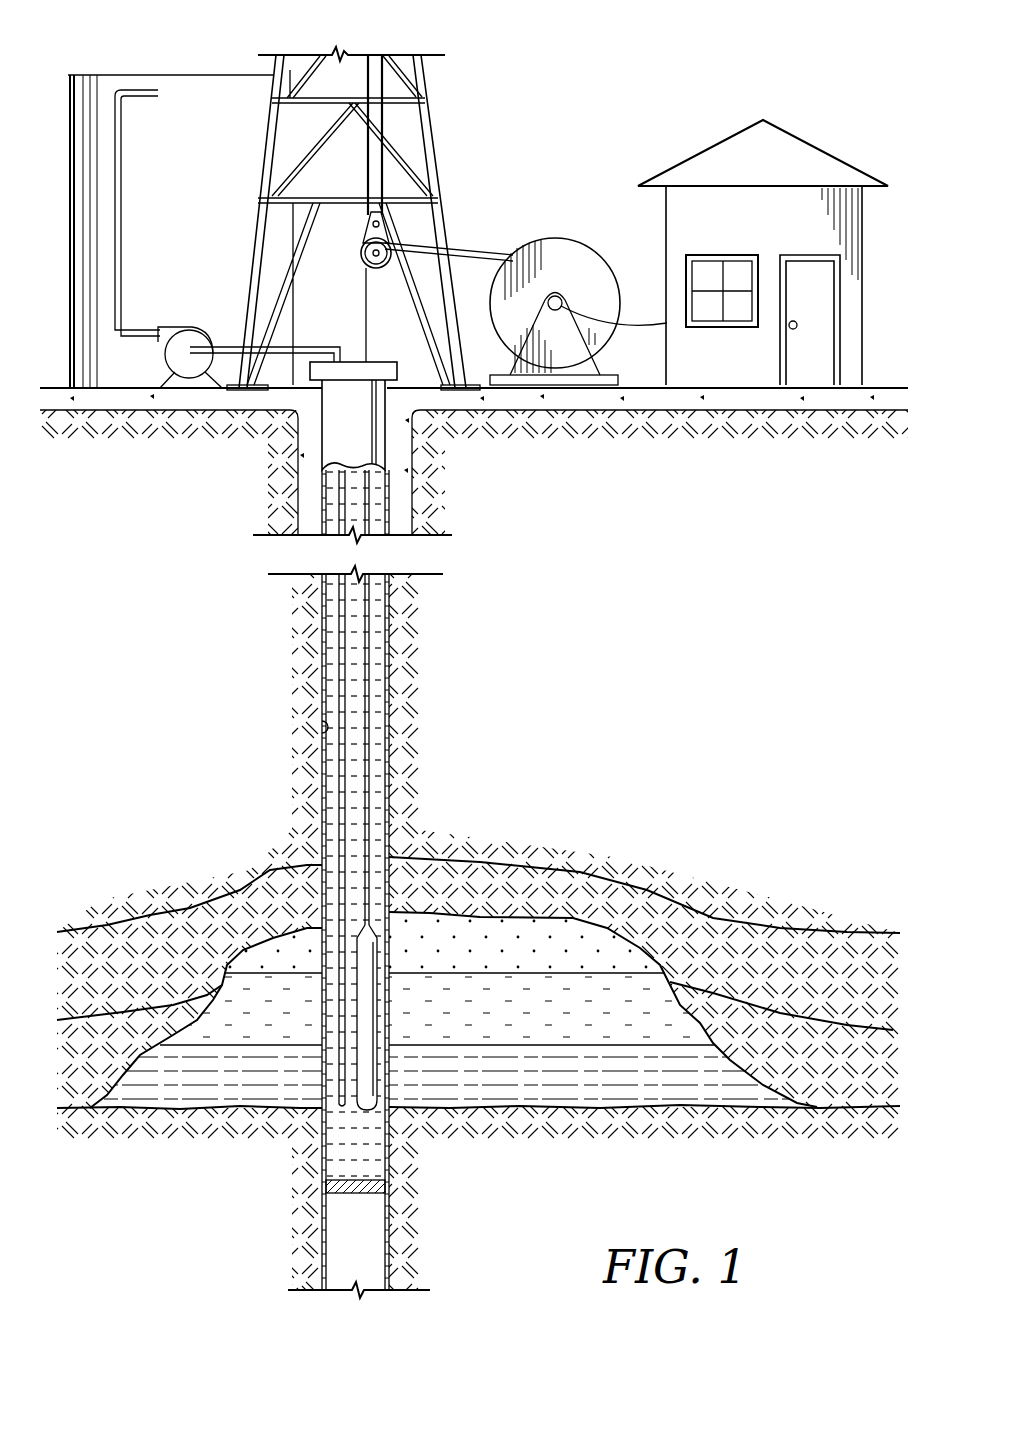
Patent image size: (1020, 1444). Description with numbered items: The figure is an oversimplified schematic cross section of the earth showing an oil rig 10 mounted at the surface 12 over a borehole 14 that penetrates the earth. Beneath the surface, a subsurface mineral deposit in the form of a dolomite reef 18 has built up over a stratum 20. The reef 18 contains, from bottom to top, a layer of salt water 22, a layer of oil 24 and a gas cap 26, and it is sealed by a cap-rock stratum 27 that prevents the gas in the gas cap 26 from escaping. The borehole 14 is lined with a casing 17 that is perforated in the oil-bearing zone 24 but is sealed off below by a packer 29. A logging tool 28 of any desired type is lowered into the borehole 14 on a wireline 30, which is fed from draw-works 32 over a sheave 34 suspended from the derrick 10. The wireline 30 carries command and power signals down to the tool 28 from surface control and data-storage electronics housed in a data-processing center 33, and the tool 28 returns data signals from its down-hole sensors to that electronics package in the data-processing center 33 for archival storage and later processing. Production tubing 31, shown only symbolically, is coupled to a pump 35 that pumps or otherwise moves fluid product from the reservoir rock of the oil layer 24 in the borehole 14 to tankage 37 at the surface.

The oil rig 10 is at (436, 121).
The surface 12 is at (882, 386).
The borehole 14 is at (322, 776).
The casing 17 is at (322, 722).
The dolomite reef 18 is at (672, 956).
The stratum 20 is at (491, 1183).
The layer of salt water 22 is at (491, 1087).
The layer of oil 24 is at (491, 1019).
The gas cap 26 is at (491, 959).
The cap-rock stratum 27 is at (491, 904).
The logging tool 28 is at (378, 945).
The packer 29 is at (350, 1194).
The wireline 30 is at (470, 252).
The production tubing 31 is at (337, 677).
The draw-works 32 is at (548, 240).
The data-processing center 33 is at (797, 137).
The sheave 34 is at (383, 270).
The pump 35 is at (184, 328).
The tankage 37 is at (190, 75).